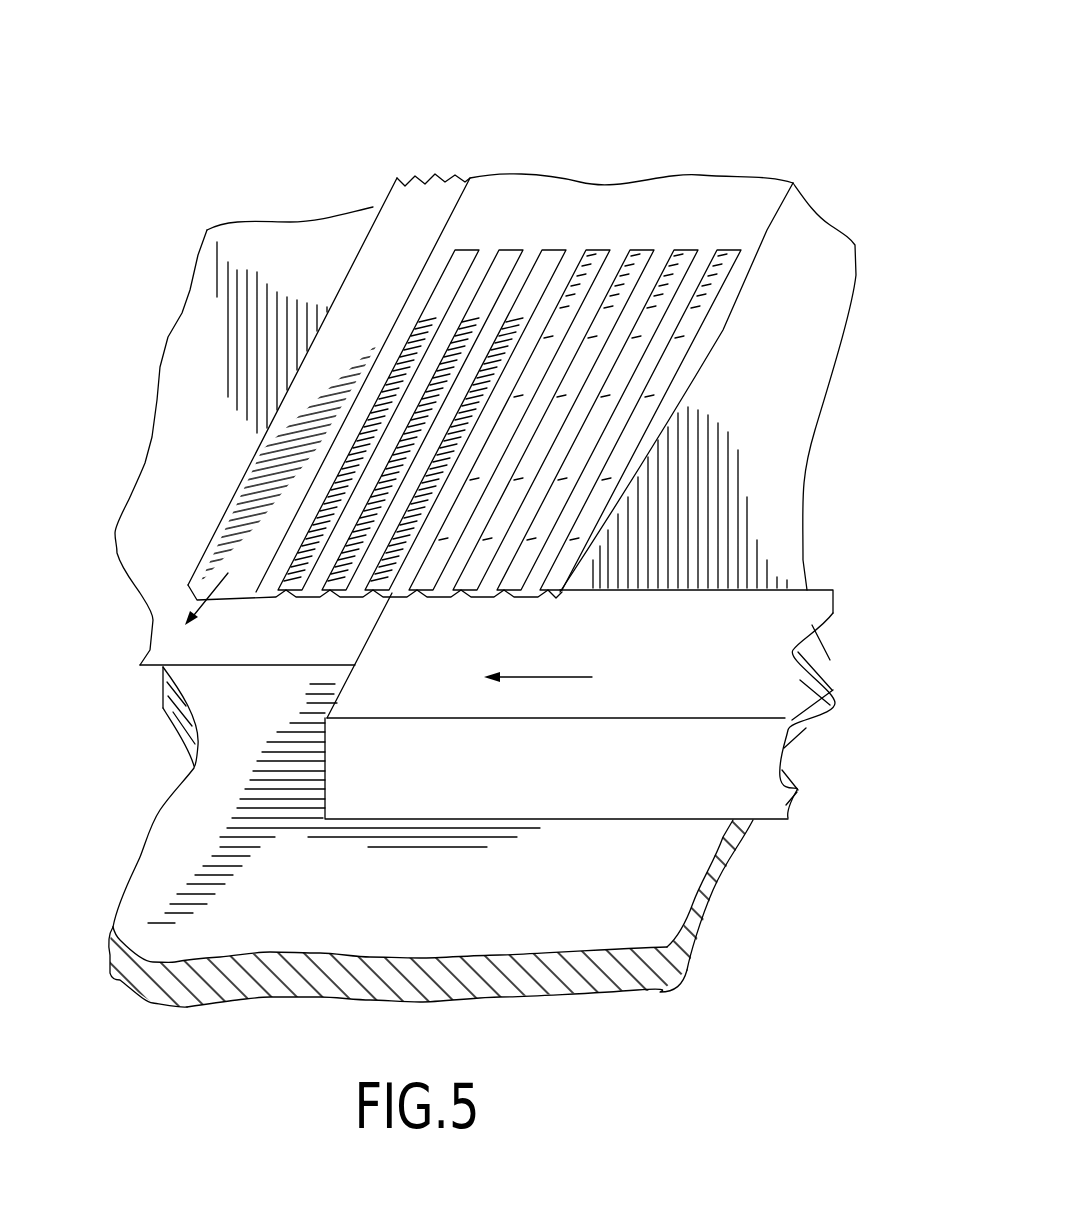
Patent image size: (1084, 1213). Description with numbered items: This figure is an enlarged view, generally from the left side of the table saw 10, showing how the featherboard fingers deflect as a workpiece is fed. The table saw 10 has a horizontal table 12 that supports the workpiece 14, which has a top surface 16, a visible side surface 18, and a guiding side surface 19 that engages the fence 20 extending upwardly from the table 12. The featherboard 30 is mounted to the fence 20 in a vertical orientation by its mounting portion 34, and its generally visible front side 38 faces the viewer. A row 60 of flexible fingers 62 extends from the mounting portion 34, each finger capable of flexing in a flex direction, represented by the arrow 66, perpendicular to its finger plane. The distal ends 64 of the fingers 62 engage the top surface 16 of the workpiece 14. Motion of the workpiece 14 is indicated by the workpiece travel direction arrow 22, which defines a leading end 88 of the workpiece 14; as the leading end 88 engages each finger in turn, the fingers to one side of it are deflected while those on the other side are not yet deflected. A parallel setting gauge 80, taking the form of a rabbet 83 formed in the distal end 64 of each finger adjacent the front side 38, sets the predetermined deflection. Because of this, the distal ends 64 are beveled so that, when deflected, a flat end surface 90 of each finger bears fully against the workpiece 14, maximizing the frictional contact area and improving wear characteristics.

The table saw 10 is at (296, 140).
The horizontal table 12 is at (357, 912).
The workpiece 14 is at (757, 693).
The top surface 16 is at (772, 648).
The visible side surface 18 is at (668, 782).
The guiding side surface 19 is at (771, 588).
The fence 20 is at (220, 305).
The workpiece travel direction arrow 22 is at (540, 677).
The featherboard 30 is at (670, 85).
The mounting portion 34 is at (577, 210).
The front side 38 is at (737, 197).
The row of flexible fingers 60 is at (180, 488).
The flexible fingers 62 is at (295, 430).
The distal ends 64 is at (196, 588).
The flex direction arrow 66 is at (215, 583).
The parallel setting gauge 80 is at (398, 618).
The rabbet 83 is at (312, 596).
The leading end 88 is at (342, 686).
The flat end surface 90 is at (437, 598).